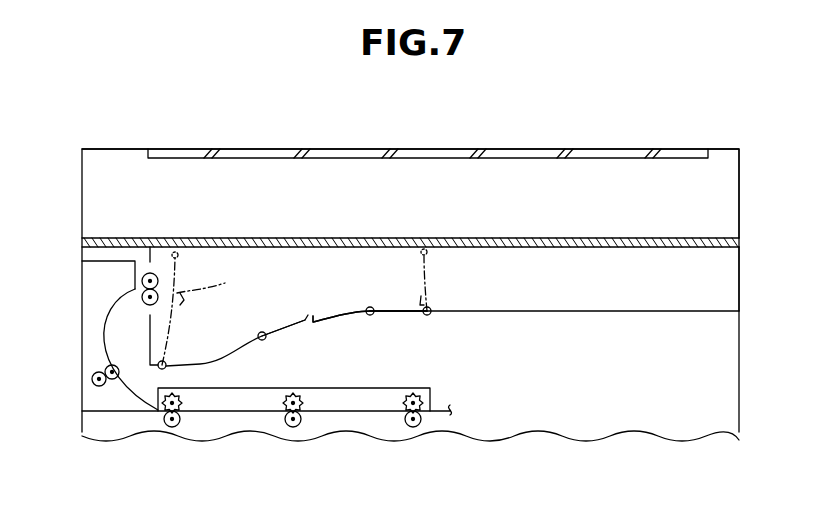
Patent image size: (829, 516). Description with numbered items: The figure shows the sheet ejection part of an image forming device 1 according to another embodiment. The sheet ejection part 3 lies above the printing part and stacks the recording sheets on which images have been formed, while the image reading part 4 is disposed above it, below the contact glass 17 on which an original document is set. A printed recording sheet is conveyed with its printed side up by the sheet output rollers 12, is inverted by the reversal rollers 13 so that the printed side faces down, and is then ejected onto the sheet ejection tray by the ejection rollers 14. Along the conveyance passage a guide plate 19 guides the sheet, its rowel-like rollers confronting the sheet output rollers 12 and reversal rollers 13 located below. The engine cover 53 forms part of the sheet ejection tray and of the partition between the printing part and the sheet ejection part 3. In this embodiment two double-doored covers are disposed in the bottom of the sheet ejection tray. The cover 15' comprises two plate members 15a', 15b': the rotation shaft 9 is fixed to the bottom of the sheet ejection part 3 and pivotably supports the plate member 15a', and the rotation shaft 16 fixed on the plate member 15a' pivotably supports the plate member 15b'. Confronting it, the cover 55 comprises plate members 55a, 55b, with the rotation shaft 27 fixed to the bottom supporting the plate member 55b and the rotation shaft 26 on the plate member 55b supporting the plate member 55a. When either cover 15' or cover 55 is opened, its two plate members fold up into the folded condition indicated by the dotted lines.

The image forming device 1 is at (76, 281).
The sheet ejection part 3 is at (732, 273).
The image reading part 4 is at (732, 193).
The rotation shaft 9 is at (158, 368).
The sheet output rollers 12 is at (293, 428).
The reversal rollers 13 is at (92, 379).
The ejection rollers 14 is at (142, 288).
The double-doored cover 15' is at (206, 308).
The plate member 15a' is at (237, 352).
The plate member 15b' is at (299, 340).
The rotation shaft 16 is at (262, 342).
The contact glass 17 is at (447, 157).
The guide plate 19 is at (360, 400).
The rotation shaft 26 is at (372, 316).
The rotation shaft 27 is at (431, 314).
The engine cover 53 is at (562, 309).
The double-doored cover 55 is at (350, 311).
The plate member 55a is at (342, 321).
The plate member 55b is at (408, 316).